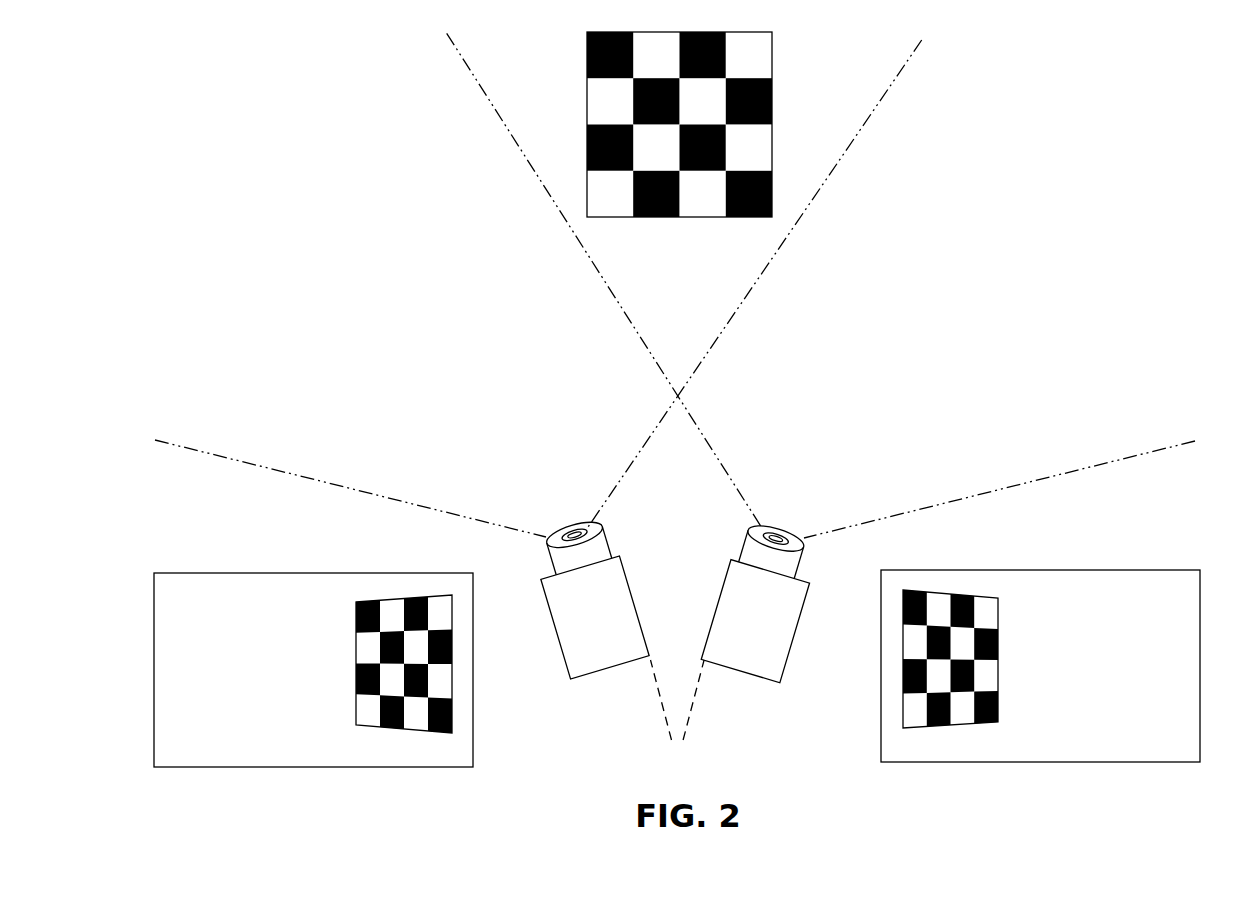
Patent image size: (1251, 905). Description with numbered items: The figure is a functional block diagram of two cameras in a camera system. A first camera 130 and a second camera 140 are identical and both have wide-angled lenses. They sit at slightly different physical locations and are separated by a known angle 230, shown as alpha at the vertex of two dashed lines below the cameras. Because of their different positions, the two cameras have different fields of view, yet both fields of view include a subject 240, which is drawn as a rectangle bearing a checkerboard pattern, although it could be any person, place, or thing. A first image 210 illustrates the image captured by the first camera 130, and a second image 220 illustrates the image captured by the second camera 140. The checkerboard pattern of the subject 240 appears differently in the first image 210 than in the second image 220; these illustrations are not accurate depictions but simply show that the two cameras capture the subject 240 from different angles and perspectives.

The first camera 130 is at (591, 687).
The second camera 140 is at (765, 688).
The first image 210 is at (276, 564).
The second image 220 is at (1103, 561).
The known angle 230 is at (677, 651).
The subject 240 is at (784, 168).